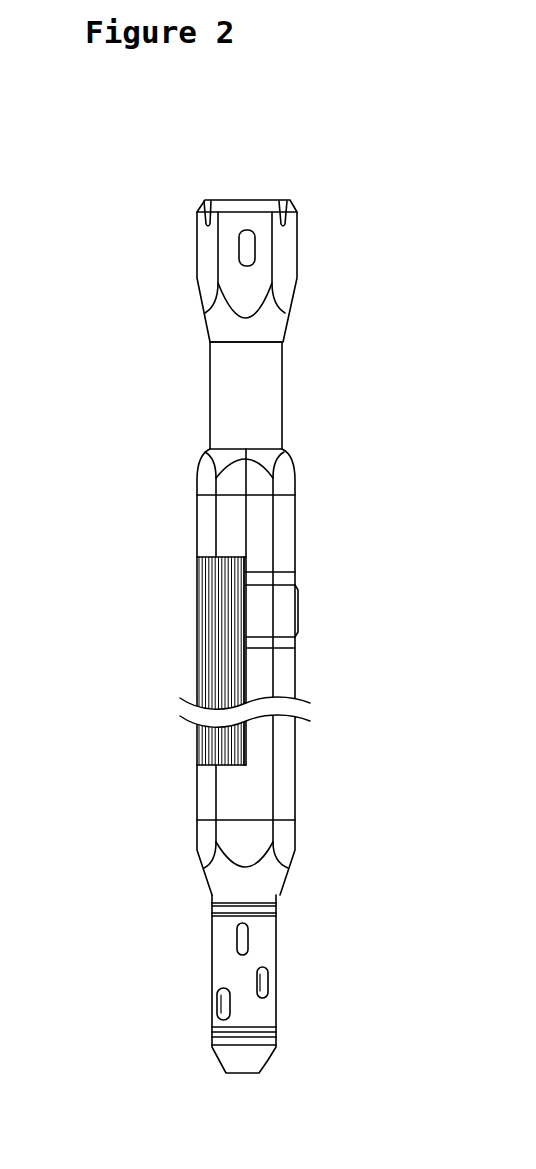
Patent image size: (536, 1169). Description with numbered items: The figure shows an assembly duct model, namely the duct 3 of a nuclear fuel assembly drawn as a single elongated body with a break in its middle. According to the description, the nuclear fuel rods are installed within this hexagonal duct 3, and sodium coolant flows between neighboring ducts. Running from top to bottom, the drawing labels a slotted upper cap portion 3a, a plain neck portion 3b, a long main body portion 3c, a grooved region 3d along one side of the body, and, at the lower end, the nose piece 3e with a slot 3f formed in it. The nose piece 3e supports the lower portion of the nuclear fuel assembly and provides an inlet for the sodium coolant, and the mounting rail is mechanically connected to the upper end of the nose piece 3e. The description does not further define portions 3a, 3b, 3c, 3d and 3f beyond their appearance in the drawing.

The duct 3 is at (242, 585).
The slot in upper cap 3a is at (248, 248).
The neck section 3b is at (248, 402).
The main body 3c is at (242, 672).
The knurled / grooved gripping region 3d is at (213, 615).
The nose piece 3e is at (262, 952).
The slot in lower end section 3f is at (222, 1007).